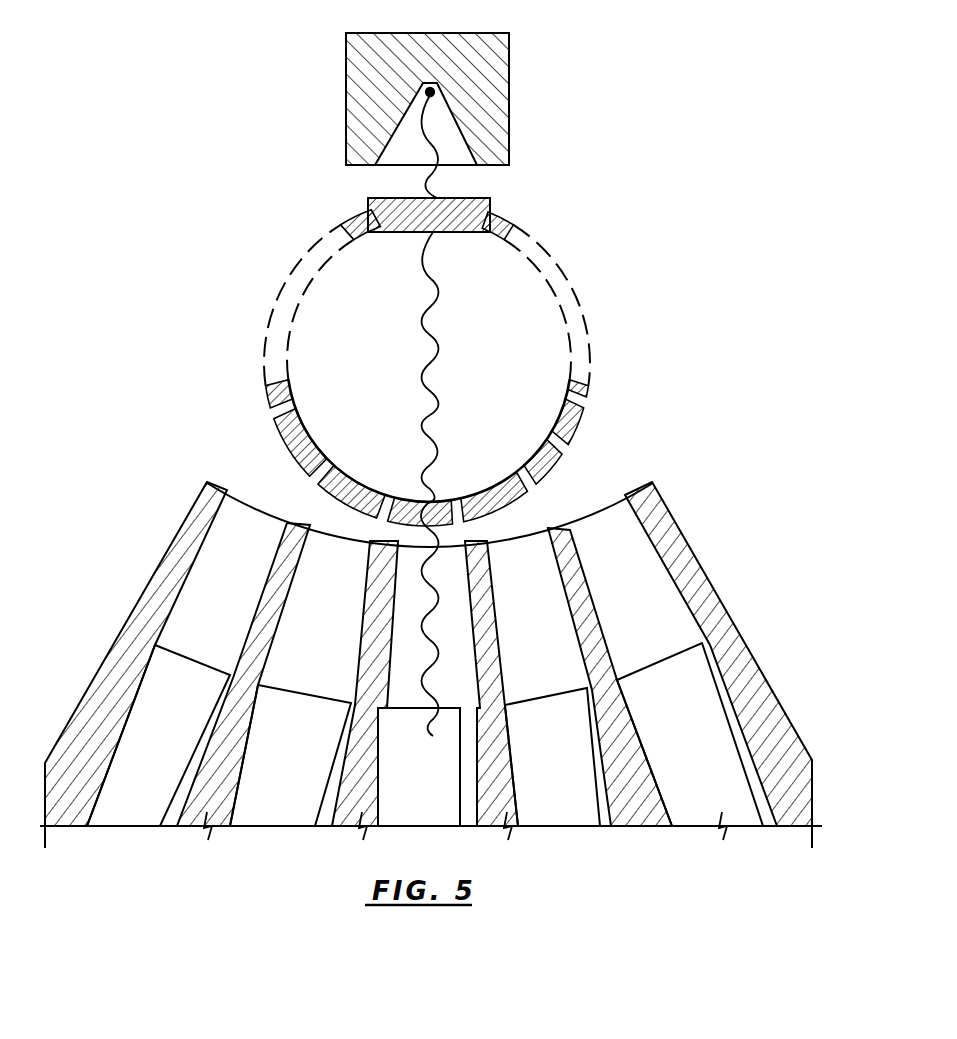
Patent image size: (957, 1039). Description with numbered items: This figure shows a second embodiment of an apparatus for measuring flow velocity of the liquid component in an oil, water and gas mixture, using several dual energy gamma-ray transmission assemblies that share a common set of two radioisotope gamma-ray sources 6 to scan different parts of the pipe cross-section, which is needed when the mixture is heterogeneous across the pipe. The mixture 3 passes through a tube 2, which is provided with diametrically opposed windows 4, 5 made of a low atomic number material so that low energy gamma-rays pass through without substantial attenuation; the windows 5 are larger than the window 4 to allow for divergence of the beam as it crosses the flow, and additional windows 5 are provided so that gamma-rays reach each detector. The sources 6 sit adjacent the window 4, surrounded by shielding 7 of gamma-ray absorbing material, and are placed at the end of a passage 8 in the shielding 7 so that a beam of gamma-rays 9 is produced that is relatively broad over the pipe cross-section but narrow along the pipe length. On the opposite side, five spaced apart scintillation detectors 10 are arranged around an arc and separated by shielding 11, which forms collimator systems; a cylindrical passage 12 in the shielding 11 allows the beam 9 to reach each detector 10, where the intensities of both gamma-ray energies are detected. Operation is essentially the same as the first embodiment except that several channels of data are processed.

The tube 2 is at (570, 262).
The mixture 3 is at (407, 358).
The window 4 is at (470, 198).
The window 5 is at (286, 429).
The radioisotope gamma-ray sources 6 is at (435, 90).
The shielding 7 is at (493, 117).
The passage 8 is at (400, 147).
The beam of gamma-rays 9 is at (437, 400).
The scintillation detector 10 is at (204, 702).
The shielding 11 is at (192, 528).
The cylindrical passage 12 is at (254, 590).